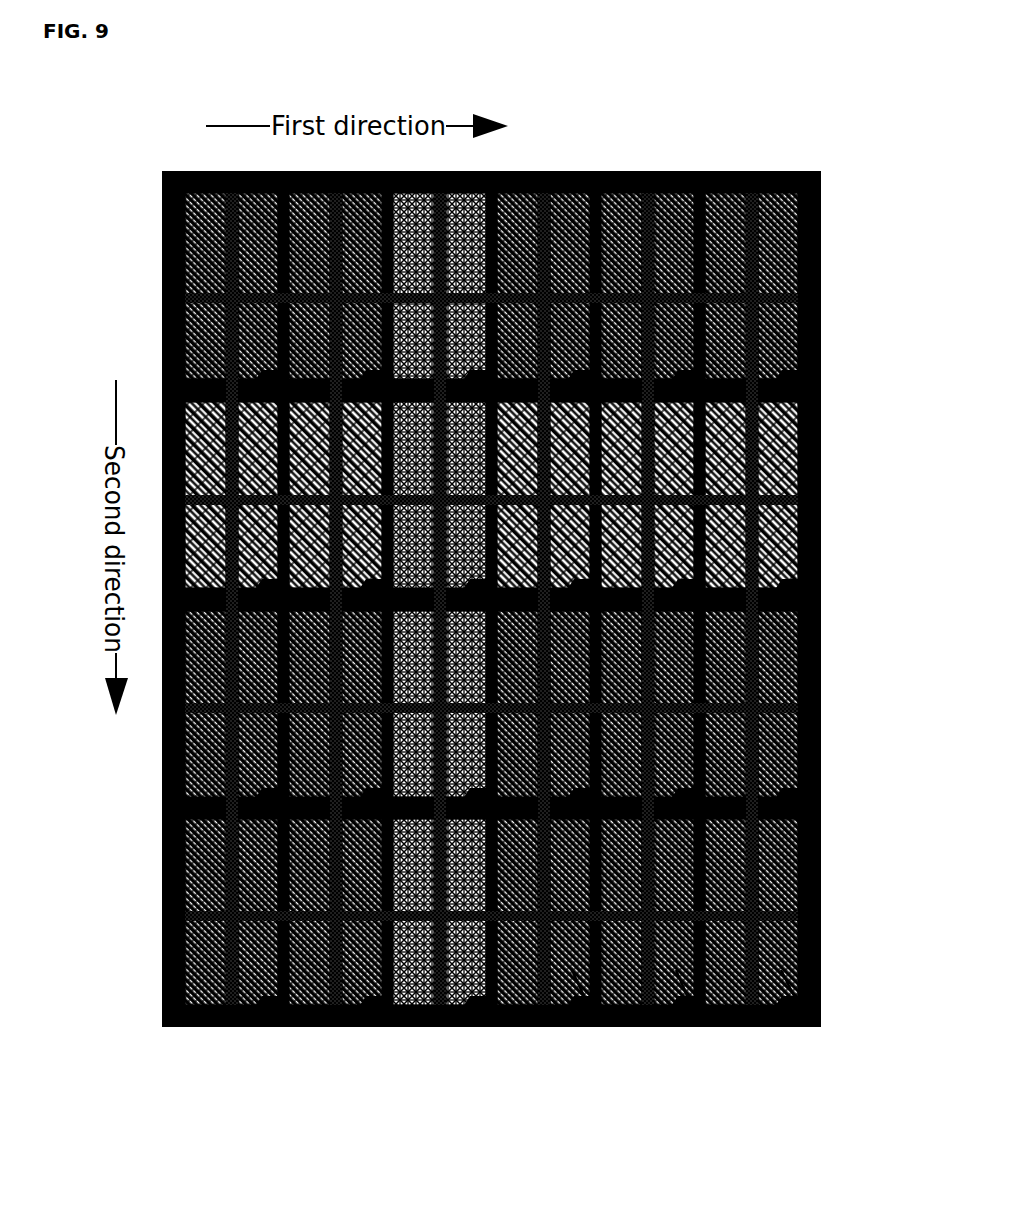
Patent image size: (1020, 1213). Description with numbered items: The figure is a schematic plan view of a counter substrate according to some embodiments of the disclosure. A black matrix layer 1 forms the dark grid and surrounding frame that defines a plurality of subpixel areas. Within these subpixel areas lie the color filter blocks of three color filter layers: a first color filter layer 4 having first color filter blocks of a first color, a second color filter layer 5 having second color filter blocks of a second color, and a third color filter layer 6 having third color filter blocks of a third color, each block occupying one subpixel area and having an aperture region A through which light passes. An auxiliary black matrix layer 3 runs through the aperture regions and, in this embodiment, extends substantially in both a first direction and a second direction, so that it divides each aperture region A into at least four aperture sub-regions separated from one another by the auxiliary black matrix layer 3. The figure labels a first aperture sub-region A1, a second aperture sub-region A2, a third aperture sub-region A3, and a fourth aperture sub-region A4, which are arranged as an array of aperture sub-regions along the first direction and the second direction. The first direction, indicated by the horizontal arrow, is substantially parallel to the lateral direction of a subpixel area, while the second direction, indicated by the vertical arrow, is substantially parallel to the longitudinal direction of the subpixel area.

The black matrix layer 1 is at (813, 265).
The auxiliary black matrix layer 3 is at (813, 291).
The first color filter layer 4 is at (592, 1020).
The second color filter layer 5 is at (697, 1020).
The third color filter layer 6 is at (800, 1020).
The aperture region A is at (174, 286).
The first aperture sub-region A1 is at (205, 245).
The second aperture sub-region A2 is at (258, 245).
The third aperture sub-region A3 is at (205, 338).
The fourth aperture sub-region A4 is at (258, 338).